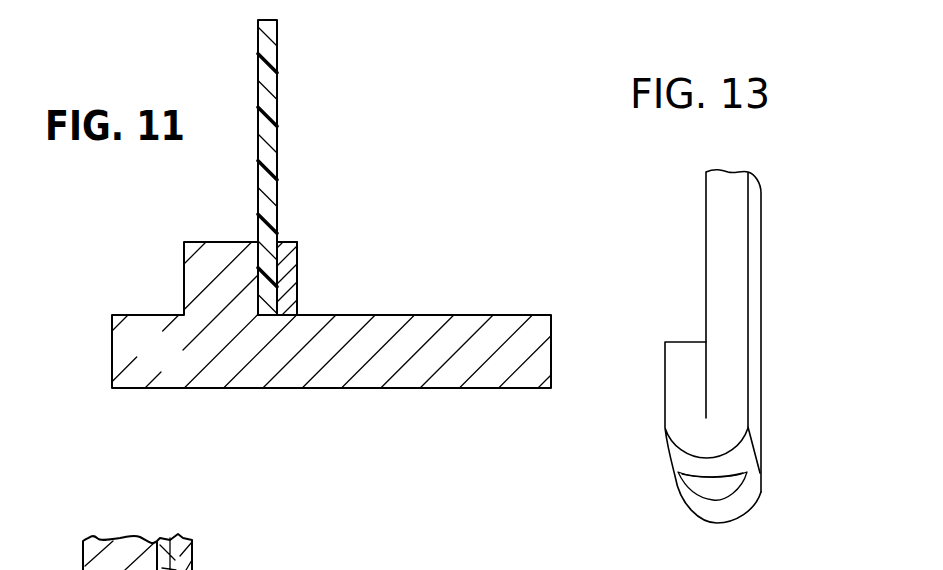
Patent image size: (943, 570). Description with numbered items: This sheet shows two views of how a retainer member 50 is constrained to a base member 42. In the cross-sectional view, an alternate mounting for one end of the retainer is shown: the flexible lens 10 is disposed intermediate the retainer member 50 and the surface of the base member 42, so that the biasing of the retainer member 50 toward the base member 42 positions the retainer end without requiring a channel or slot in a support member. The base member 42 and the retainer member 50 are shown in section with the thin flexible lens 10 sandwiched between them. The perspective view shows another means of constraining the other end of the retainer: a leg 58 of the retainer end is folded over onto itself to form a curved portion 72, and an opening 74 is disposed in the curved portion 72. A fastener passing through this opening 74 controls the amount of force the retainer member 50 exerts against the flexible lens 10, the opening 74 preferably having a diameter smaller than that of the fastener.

In FIG. 11, the flexible lens 10 is at (277, 127).
In FIG. 11, the base member 42 is at (180, 359).
In FIG. 11, the retainer member 50 is at (297, 288).
In FIG. 13, the retainer member 50 is at (773, 326).
In FIG. 13, the leg 58 is at (665, 405).
In FIG. 13, the curved portion 72 is at (750, 497).
In FIG. 13, the opening 74 is at (680, 482).